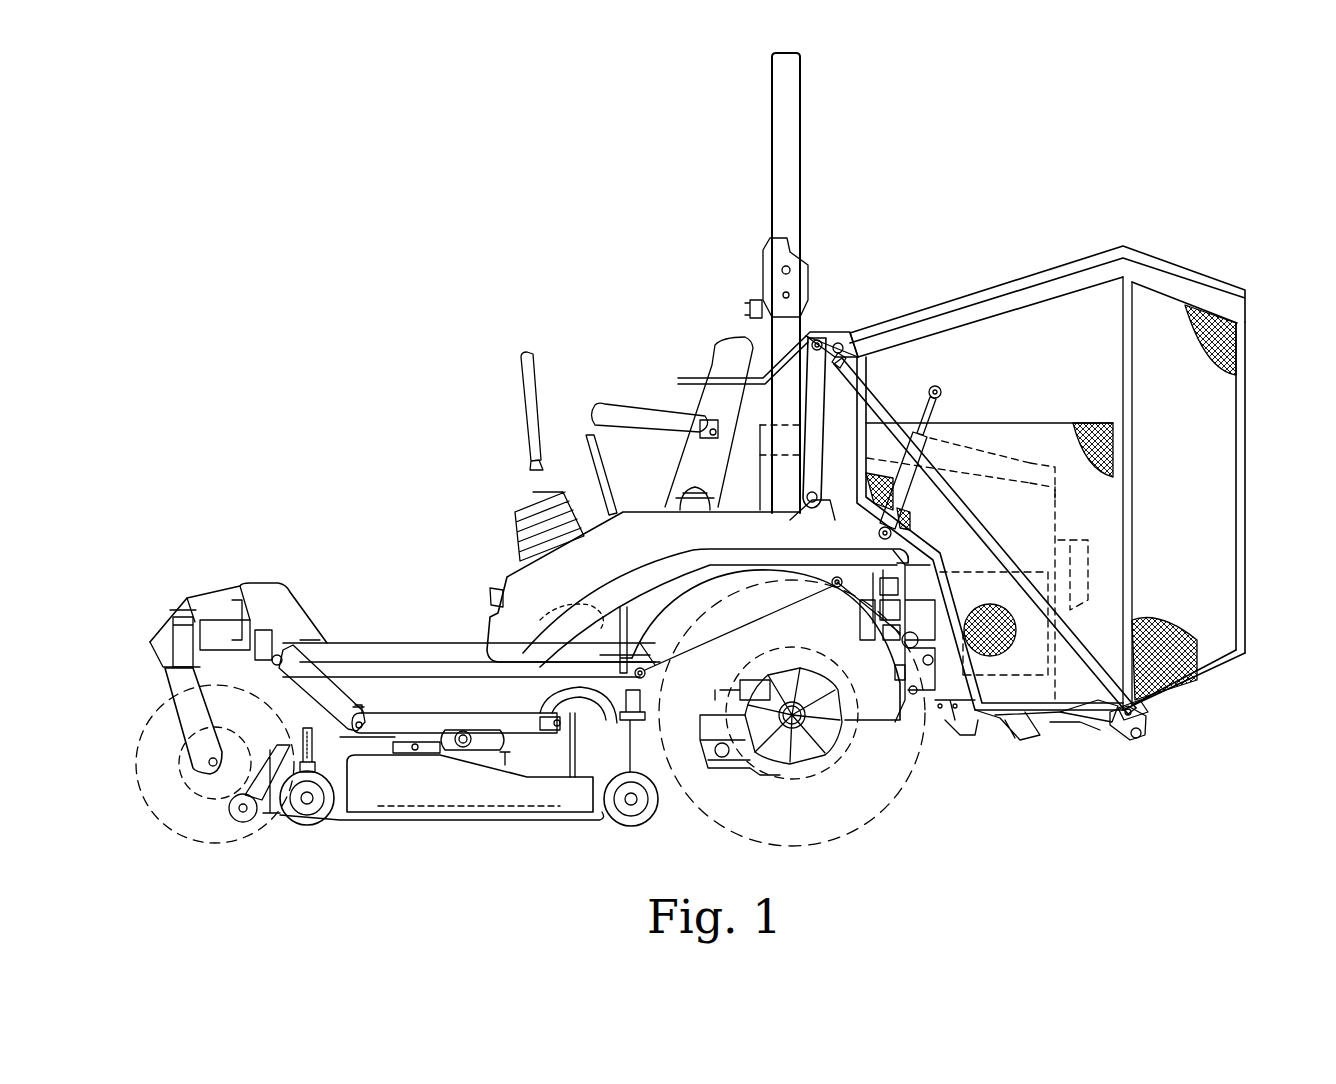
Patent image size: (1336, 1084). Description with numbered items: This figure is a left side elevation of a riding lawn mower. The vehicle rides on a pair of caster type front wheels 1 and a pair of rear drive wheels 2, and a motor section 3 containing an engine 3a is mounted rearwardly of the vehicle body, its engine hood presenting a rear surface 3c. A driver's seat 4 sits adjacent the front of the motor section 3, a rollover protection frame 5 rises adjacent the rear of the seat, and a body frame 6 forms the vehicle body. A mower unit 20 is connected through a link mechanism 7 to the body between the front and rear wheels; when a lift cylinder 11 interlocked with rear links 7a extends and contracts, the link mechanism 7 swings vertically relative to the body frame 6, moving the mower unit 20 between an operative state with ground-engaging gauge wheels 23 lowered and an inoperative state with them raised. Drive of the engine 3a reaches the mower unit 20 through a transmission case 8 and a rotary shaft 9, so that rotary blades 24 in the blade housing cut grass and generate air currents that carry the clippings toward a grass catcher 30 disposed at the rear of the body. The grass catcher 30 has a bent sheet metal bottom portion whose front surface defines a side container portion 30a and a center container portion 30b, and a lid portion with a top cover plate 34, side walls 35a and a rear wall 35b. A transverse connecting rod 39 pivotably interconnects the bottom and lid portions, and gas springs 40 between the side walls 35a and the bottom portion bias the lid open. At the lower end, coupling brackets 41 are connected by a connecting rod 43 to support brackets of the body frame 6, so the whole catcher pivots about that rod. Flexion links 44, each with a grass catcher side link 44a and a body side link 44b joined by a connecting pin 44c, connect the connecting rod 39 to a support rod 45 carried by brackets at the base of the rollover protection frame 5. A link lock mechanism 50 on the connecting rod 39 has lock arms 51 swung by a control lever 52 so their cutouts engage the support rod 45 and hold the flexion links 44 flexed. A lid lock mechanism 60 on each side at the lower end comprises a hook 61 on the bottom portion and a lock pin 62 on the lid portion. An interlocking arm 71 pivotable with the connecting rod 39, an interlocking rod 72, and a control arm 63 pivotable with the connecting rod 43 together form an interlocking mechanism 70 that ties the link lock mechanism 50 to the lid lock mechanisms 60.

The front wheels 1 is at (185, 822).
The rear drive wheels 2 is at (888, 800).
The motor section 3 is at (995, 440).
The engine 3a is at (929, 646).
The rear surface 3c is at (1068, 490).
The driver's seat 4 is at (712, 368).
The rollover protection frame 5 is at (793, 93).
The body frame 6 is at (410, 641).
The link mechanism 7 is at (338, 676).
The rear links 7a is at (540, 672).
The transmission case 8 is at (742, 755).
The rotary shaft 9 is at (625, 700).
The lift cylinder 11 is at (600, 600).
The mower unit 20 is at (426, 745).
The gauge wheels 23 is at (313, 808).
The rotary blades 24 is at (445, 822).
The grass catcher 30 is at (1177, 260).
The side container portion 30a is at (1212, 665).
The center container portion 30b is at (970, 338).
The top cover plate 34 is at (1087, 262).
The side walls 35a is at (1010, 330).
The rear wall 35b is at (1243, 423).
The connecting rod 39 is at (845, 338).
The gas springs 40 is at (915, 467).
The coupling brackets 41 is at (1105, 718).
The connecting rod 43 is at (1135, 740).
The flexion links 44 is at (796, 409).
The grass catcher side link 44a is at (805, 345).
The body side link 44b is at (848, 405).
The connecting pin 44c is at (808, 505).
The support rod 45 is at (818, 340).
The link lock mechanism 50 is at (851, 318).
The lock arms 51 is at (844, 339).
The control lever 52 is at (680, 380).
The lid lock mechanism 60 is at (1127, 770).
The hook 61 is at (1120, 735).
The lock pin 62 is at (1140, 712).
The control arm 63 is at (1145, 735).
The interlocking mechanism 70 is at (1006, 542).
The interlocking arm 71 is at (845, 362).
The interlocking rod 72 is at (965, 513).